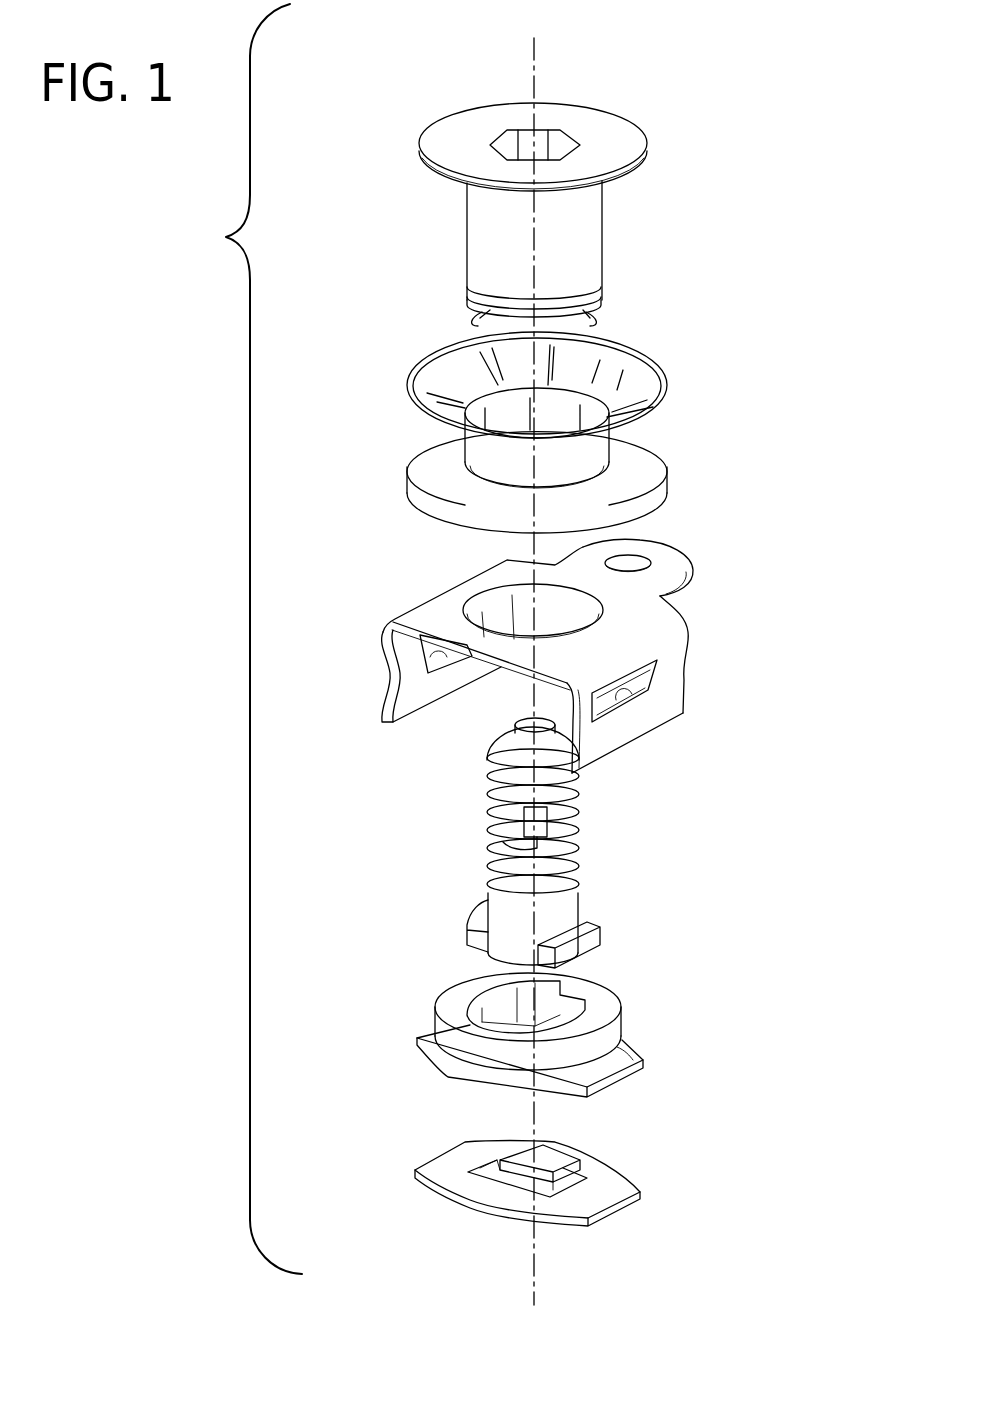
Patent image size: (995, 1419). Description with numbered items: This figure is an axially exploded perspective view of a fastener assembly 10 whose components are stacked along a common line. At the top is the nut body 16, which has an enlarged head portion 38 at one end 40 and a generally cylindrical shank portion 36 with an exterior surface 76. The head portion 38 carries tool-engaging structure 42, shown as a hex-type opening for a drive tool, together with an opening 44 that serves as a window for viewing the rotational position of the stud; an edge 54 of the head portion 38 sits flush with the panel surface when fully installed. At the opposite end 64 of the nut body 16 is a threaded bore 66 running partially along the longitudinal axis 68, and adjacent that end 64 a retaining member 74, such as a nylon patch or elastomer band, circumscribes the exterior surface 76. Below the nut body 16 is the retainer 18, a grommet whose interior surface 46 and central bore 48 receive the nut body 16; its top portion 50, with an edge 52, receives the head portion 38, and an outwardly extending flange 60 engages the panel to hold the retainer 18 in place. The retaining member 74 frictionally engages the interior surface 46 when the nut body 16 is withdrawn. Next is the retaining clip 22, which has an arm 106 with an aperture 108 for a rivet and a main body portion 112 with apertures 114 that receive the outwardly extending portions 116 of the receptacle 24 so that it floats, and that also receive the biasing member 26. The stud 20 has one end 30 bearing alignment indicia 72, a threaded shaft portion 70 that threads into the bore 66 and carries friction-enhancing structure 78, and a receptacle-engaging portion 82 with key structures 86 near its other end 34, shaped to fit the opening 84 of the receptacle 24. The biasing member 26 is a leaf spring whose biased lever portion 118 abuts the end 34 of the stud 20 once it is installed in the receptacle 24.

The fastener assembly 10 is at (226, 237).
The nut body 16 is at (535, 194).
The retainer 18 is at (544, 423).
The stud 20 is at (547, 839).
The retaining clip 22 is at (542, 641).
The receptacle 24 is at (528, 1035).
The biasing member 26 is at (542, 1173).
The end of the stud 30 is at (500, 736).
The end of the stud 34 is at (495, 972).
The shank portion 36 is at (603, 222).
The head portion 38 is at (622, 128).
The end of the nut body 40 is at (474, 120).
The tool-engaging structure 42 is at (548, 140).
The opening 44 is at (524, 140).
The interior surface 46 is at (614, 375).
The central bore 48 is at (502, 415).
The top portion 50 is at (667, 396).
The edge 52 is at (658, 360).
The edge 54 is at (648, 148).
The flange 60 is at (648, 455).
The end of the nut body 64 is at (588, 314).
The threaded bore 66 is at (474, 322).
The longitudinal axis 68 is at (536, 66).
The threaded shaft portion 70 is at (582, 788).
The alignment indicia 72 is at (528, 720).
The retaining member 74 is at (470, 290).
The exterior surface 76 is at (603, 252).
The friction-enhancing structure 78 is at (520, 846).
The receptacle-engaging portion 82 is at (602, 946).
The opening 84 is at (500, 1002).
The key structures 86 is at (596, 965).
The arm 106 is at (684, 586).
The aperture 108 is at (628, 562).
The main body portion 112 is at (700, 624).
The apertures 114 is at (430, 648).
The outwardly extending portion 116 is at (428, 1045).
The biased lever portion 118 is at (535, 1158).